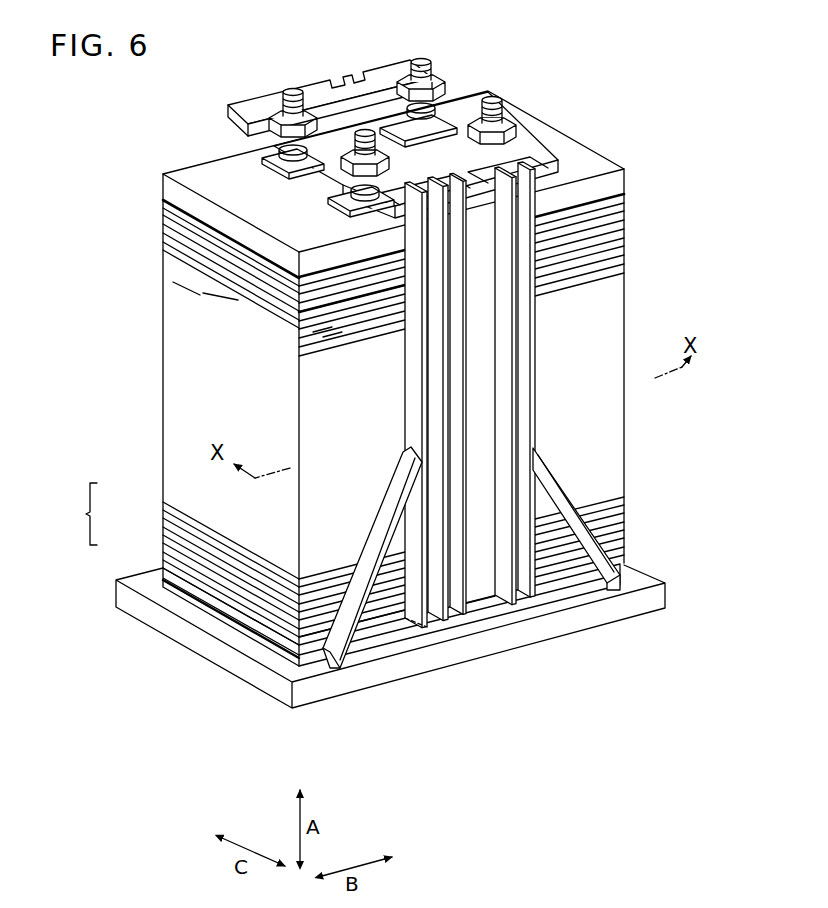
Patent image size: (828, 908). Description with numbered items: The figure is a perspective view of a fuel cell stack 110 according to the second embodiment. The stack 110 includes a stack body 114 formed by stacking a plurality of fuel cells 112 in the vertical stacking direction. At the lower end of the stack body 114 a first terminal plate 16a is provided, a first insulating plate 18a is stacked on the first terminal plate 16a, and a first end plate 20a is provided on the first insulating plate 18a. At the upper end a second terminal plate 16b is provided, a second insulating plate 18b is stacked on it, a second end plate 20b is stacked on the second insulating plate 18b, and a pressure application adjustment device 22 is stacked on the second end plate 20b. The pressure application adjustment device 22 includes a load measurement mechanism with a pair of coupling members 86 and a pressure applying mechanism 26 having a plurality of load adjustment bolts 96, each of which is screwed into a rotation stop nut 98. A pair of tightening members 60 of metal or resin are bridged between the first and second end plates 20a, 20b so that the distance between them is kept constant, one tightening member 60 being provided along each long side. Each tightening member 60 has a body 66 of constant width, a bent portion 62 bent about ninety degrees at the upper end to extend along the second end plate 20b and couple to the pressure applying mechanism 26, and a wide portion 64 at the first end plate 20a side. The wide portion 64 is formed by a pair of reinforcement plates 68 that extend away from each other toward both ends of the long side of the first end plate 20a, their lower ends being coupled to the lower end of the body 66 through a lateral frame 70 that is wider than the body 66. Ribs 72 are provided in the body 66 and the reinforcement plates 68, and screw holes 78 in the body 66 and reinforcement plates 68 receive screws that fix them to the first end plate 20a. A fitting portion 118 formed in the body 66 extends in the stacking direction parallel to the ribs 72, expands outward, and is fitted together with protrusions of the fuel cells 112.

The fuel cell stack 110 is at (136, 99).
The load adjustment bolt 96 is at (293, 98).
The pressure applying mechanism 26 is at (448, 67).
The pressure application adjustment device 22 is at (509, 94).
The rotation stop nut 98 is at (517, 130).
The bent portion 62 is at (370, 184).
The tightening member 60 is at (226, 116).
The second end plate 20b is at (172, 188).
The second insulating plate 18b is at (162, 202).
The second terminal plate 16b is at (162, 215).
The coupling member 86 is at (277, 177).
The rib 72 is at (513, 327).
The body 66 is at (497, 374).
The wide portion 64 is at (372, 531).
The reinforcement plate 68 is at (587, 522).
The stack body 114 is at (333, 560).
The fuel cell 112 is at (160, 503).
The first end plate 20a is at (114, 581).
The first terminal plate 16a is at (178, 580).
The first insulating plate 18a is at (192, 598).
The lateral frame 70 is at (380, 637).
The screw hole 78 is at (408, 633).
The fitting portion 118 is at (477, 602).